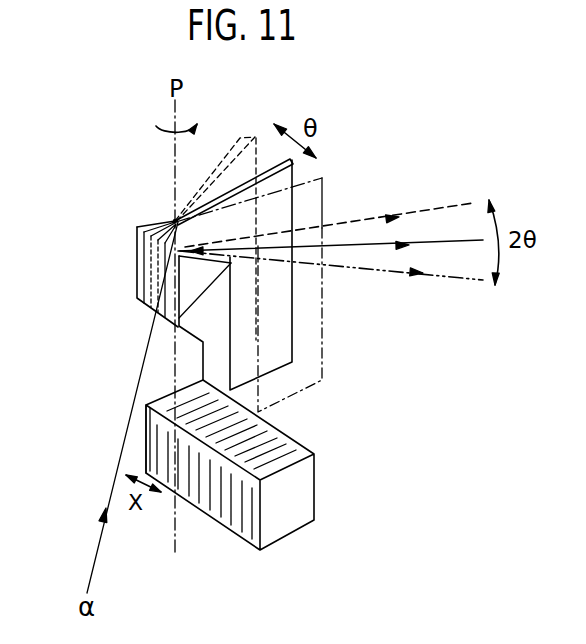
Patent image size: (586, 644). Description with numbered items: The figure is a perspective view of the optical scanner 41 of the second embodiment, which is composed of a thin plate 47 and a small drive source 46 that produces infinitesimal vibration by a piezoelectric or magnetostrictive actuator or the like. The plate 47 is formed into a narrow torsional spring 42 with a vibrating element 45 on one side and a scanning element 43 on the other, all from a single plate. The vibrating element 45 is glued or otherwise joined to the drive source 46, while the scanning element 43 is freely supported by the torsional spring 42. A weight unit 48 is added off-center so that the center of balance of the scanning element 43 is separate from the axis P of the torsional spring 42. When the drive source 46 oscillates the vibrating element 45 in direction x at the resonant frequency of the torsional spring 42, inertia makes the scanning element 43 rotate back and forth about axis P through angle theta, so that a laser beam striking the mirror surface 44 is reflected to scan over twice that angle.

The optical scanner 41 is at (121, 373).
The torsional spring 42 is at (167, 325).
The scanning element 43 is at (242, 140).
The mirror surface 44 is at (184, 246).
The vibrating element 45 is at (142, 445).
The drive source 46 is at (203, 507).
The thin plate 47 is at (138, 262).
The weight unit 48 is at (278, 342).